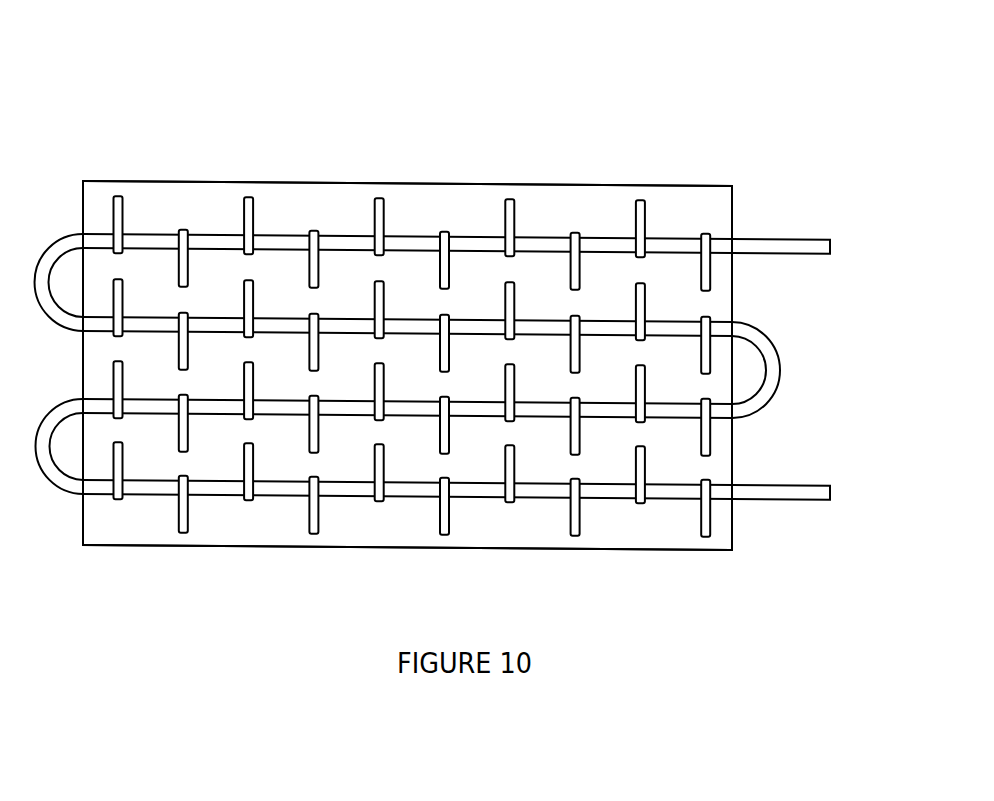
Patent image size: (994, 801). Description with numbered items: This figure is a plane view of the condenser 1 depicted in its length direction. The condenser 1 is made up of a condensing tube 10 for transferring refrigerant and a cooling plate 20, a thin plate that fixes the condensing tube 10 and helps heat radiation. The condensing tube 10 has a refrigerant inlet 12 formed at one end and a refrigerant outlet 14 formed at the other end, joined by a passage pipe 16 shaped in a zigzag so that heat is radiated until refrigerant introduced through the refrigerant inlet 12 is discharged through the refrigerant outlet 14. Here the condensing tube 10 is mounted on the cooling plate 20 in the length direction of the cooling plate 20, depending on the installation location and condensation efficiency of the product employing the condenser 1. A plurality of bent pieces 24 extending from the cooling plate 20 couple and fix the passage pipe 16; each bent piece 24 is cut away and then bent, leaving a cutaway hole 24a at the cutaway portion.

The condenser 1 is at (572, 144).
The condensing tube 10 is at (757, 234).
The refrigerant inlet 12 is at (813, 247).
The refrigerant outlet 14 is at (803, 490).
The passage pipe 16 is at (772, 390).
The cooling plate 20 is at (283, 184).
The bent piece 24 is at (389, 246).
The cutaway hole 24a is at (375, 199).